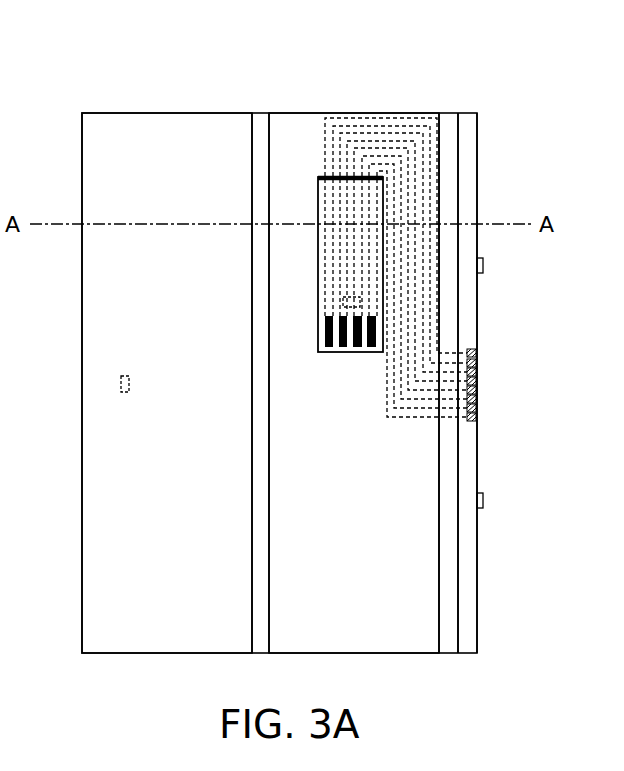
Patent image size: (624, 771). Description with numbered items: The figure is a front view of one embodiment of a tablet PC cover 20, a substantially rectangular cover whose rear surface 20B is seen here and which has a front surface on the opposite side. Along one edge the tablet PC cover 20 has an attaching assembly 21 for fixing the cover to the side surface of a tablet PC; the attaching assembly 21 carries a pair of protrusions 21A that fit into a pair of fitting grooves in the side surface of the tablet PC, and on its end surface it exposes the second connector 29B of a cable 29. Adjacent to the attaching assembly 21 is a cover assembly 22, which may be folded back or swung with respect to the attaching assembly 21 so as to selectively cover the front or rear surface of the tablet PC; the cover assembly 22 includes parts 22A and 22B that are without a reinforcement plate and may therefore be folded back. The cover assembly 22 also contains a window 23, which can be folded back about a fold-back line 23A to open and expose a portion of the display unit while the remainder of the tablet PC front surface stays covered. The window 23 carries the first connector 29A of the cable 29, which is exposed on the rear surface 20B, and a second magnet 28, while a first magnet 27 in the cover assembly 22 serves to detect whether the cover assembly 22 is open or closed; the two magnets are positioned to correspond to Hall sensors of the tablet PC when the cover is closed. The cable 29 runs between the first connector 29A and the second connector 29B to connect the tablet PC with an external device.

The tablet PC cover 20 is at (131, 58).
The rear surface 20B is at (86, 94).
The attaching assembly 21 is at (468, 127).
The protrusions 21A is at (484, 265).
The cover assembly 22 is at (358, 110).
The part without the reinforcement plate 22A is at (263, 125).
The part without the reinforcement plate 22B is at (449, 127).
The window 23 is at (318, 308).
The fold-back line 23A is at (320, 175).
The first magnet 27 is at (121, 384).
The second magnet 28 is at (340, 291).
The cable 29 is at (403, 428).
The first connector 29A is at (353, 353).
The second connector 29B is at (488, 383).